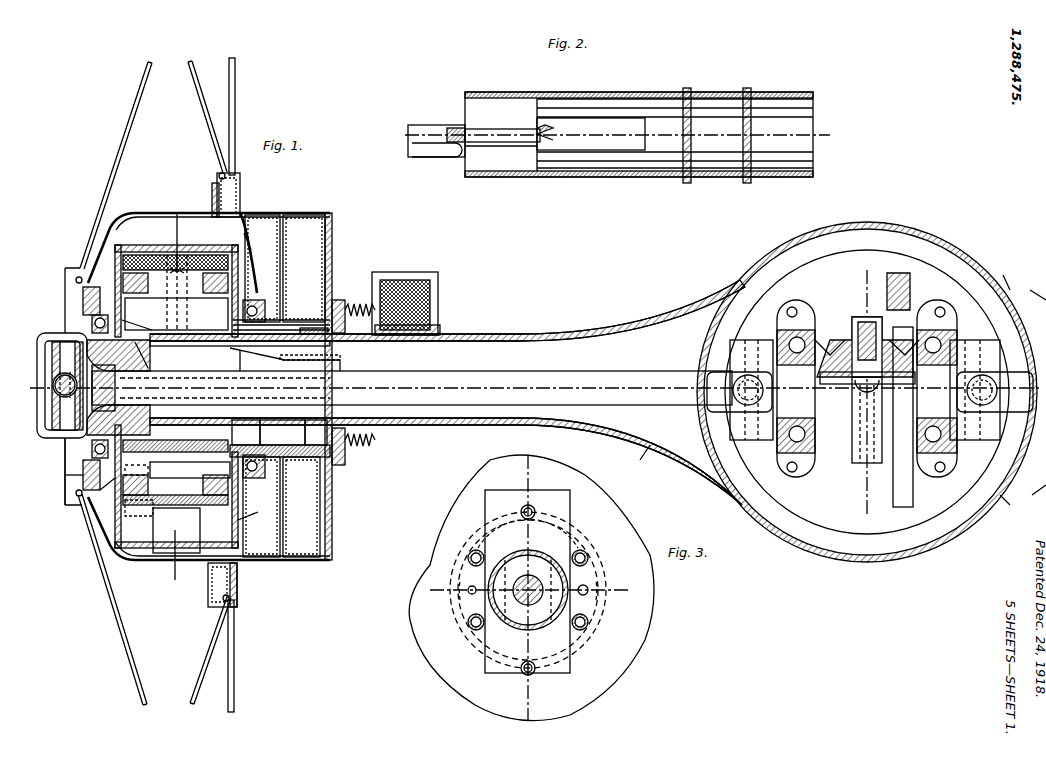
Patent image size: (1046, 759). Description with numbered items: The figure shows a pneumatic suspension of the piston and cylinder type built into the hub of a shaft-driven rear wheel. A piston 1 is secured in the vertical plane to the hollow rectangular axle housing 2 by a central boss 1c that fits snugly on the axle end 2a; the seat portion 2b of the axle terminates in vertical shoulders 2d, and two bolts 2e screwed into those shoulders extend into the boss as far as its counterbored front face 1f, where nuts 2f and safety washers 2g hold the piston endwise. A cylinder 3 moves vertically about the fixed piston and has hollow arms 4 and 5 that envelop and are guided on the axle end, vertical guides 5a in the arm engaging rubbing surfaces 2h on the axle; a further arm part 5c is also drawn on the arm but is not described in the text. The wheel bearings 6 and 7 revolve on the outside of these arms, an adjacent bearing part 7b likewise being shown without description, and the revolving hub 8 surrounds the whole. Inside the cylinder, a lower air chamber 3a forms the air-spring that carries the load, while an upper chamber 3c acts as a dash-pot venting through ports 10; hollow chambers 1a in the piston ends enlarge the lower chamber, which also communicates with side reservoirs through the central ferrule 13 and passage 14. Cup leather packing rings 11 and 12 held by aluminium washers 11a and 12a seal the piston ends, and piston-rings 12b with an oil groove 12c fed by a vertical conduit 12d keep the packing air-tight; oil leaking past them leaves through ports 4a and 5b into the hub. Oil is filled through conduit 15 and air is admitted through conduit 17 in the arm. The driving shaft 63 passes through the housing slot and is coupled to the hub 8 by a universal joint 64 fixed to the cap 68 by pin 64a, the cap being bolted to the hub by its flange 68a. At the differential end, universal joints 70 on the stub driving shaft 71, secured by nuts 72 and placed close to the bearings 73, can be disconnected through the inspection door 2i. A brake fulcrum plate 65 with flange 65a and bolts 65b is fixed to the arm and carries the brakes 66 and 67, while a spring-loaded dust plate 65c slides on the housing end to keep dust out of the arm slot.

In FIG. 1, the piston 1 is at (232, 309).
In FIG. 1, the air chambers 1a is at (175, 292).
In FIG. 1, the boss 1c is at (167, 317).
In FIG. 1, the front face 1f is at (150, 432).
In FIG. 1, the axle housing 2 is at (563, 338).
In FIG. 3, the axle housing 2 is at (516, 552).
In FIG. 1, the axle end 2a is at (280, 397).
In FIG. 1, the axle housing end 2b is at (240, 351).
In FIG. 2, the axle housing end 2b is at (510, 92).
In FIG. 2, the vertical shoulders 2d is at (530, 158).
In FIG. 2, the bolts 2e is at (498, 129).
In FIG. 1, the nuts 2f is at (140, 368).
In FIG. 1, the safety washers 2g is at (142, 351).
In FIG. 2, the vertical rubbing surfaces 2h is at (591, 132).
In FIG. 1, the inspection door 2i is at (867, 384).
In FIG. 1, the cylinder 3 is at (115, 283).
In FIG. 1, the lower air chamber 3a is at (175, 514).
In FIG. 1, the upper air chamber 3c is at (175, 259).
In FIG. 1, the hollow arm 4 is at (100, 333).
In FIG. 1, the port 4a is at (100, 440).
In FIG. 1, the hollow arm 5 is at (292, 457).
In FIG. 3, the hollow arm 5 is at (470, 544).
In FIG. 1, the vertical guides 5a is at (246, 430).
In FIG. 3, the vertical guides 5a is at (485, 626).
In FIG. 1, the port 5b is at (175, 450).
In FIG. 1, the clutch ring 5c is at (315, 430).
In FIG. 1, the bearing 6 is at (95, 323).
In FIG. 1, the bearing 7 is at (266, 300).
In FIG. 1, the worm gear 7b is at (140, 482).
In FIG. 1, the hub 8 is at (112, 222).
In FIG. 1, the vent holes 10 is at (178, 243).
In FIG. 1, the cup leather packing ring 11 is at (248, 280).
In FIG. 1, the aluminium ring 11a is at (240, 275).
In FIG. 1, the cup leather packing ring 12 is at (135, 495).
In FIG. 1, the aluminium ring 12a is at (118, 488).
In FIG. 1, the piston-rings 12b is at (80, 477).
In FIG. 1, the oil groove 12c is at (257, 478).
In FIG. 1, the vertical conduit 12d is at (178, 463).
In FIG. 1, the central ferrule 13 is at (162, 526).
In FIG. 1, the passage 14 is at (175, 556).
In FIG. 3, the conduit 15 is at (590, 588).
In FIG. 3, the conduit 17 is at (468, 592).
In FIG. 1, the driving shaft 63 is at (412, 379).
In FIG. 2, the driving shaft 63 is at (460, 160).
In FIG. 3, the driving shaft 63 is at (528, 582).
In FIG. 1, the universal joint 64 is at (62, 333).
In FIG. 1, the pin 64a is at (48, 384).
In FIG. 1, the brake fulcrum plate 65 is at (332, 238).
In FIG. 3, the brake fulcrum plate 65 is at (531, 588).
In FIG. 1, the flange 65a is at (318, 325).
In FIG. 3, the flange 65a is at (600, 608).
In FIG. 3, the bolts 65b is at (590, 557).
In FIG. 1, the dust plate 65c is at (345, 300).
In FIG. 3, the dust plate 65c is at (492, 500).
In FIG. 1, the brake 66 is at (262, 268).
In FIG. 1, the brake 67 is at (304, 268).
In FIG. 1, the cap 68 is at (40, 440).
In FIG. 1, the flange 68a is at (83, 465).
In FIG. 1, the universal joints 70 is at (755, 438).
In FIG. 1, the stub driving shaft 71 is at (867, 380).
In FIG. 1, the nuts 72 is at (860, 385).
In FIG. 1, the bearings 73 is at (948, 345).